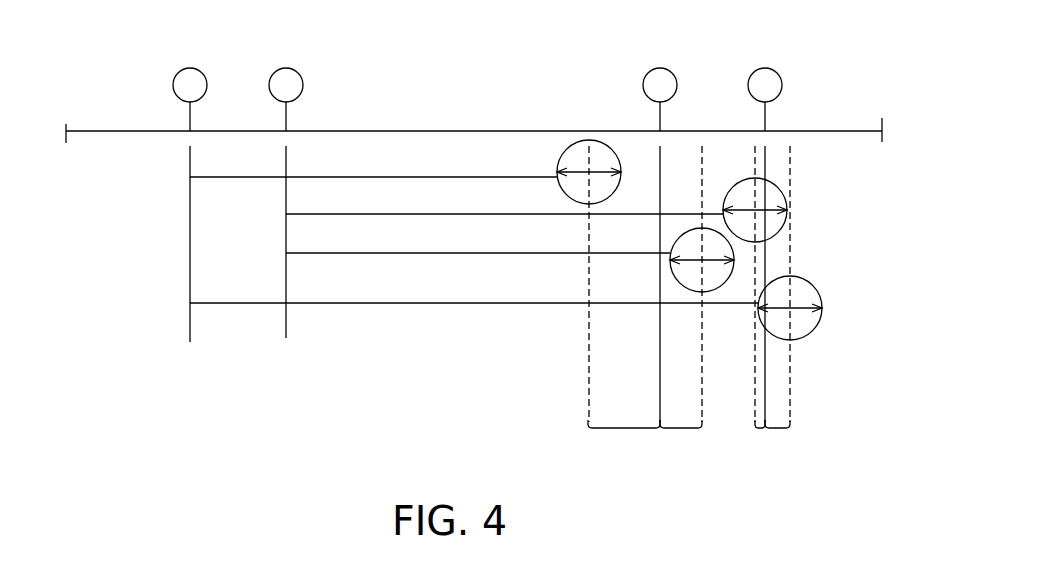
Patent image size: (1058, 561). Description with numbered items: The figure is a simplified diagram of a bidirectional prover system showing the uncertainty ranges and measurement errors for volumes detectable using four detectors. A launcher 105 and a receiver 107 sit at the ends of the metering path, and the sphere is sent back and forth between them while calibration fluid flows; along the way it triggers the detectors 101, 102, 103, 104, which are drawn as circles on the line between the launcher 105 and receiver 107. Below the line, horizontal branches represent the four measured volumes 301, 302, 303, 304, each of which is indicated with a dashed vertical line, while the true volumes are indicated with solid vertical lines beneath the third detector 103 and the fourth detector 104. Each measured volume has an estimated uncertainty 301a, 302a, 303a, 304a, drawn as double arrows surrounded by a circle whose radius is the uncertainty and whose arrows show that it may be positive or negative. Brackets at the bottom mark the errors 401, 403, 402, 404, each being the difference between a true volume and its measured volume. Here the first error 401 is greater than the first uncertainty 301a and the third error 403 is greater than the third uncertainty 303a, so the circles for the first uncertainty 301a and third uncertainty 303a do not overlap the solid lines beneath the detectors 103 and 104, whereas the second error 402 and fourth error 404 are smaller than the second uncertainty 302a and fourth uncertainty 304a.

The detector 101 is at (190, 68).
The detector 102 is at (303, 88).
The detector 103 is at (643, 86).
The detector 104 is at (765, 68).
The launcher 105 is at (66, 124).
The receiver 107 is at (882, 118).
The measured volume BPVa 301 is at (250, 178).
The measured volume BPVb 302 is at (497, 214).
The measured volume BPVc 303 is at (518, 253).
The measured volume BPVd 304 is at (250, 303).
The uncertainty Ua 301a is at (560, 172).
The uncertainty Ub 302a is at (780, 187).
The uncertainty Uc 303a is at (680, 236).
The uncertainty Ud 304a is at (822, 308).
The error Ea 401 is at (612, 442).
The error Eb 402 is at (747, 442).
The error Ec 403 is at (665, 442).
The error Ed 404 is at (797, 442).